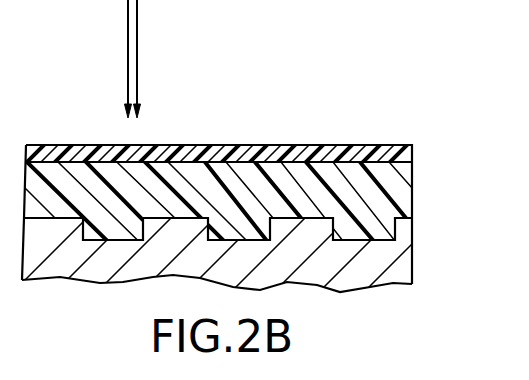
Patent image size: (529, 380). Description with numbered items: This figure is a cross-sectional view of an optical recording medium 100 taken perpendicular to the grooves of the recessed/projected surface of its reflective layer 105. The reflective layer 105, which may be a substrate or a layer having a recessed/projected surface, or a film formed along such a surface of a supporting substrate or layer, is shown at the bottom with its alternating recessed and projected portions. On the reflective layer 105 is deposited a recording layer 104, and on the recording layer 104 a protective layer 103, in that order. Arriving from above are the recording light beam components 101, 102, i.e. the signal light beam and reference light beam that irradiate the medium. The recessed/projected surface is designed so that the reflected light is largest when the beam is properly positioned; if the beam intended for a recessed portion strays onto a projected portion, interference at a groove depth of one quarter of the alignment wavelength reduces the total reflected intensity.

The layered structure 100 is at (420, 126).
The first incident beam 101 is at (128, 28).
The second incident beam 102 is at (137, 30).
The protective layer 103 is at (407, 155).
The recording layer 104 is at (408, 202).
The reflective layer 105 is at (405, 272).